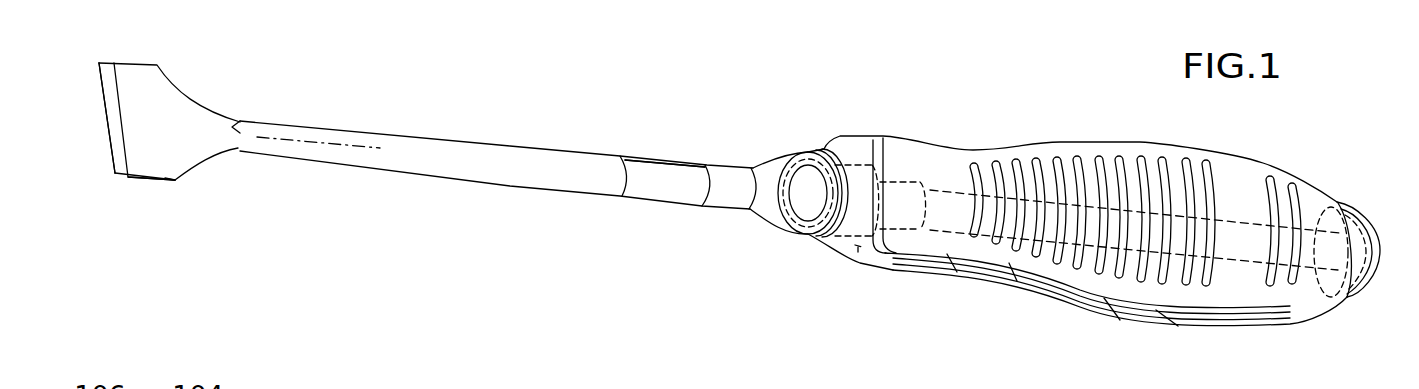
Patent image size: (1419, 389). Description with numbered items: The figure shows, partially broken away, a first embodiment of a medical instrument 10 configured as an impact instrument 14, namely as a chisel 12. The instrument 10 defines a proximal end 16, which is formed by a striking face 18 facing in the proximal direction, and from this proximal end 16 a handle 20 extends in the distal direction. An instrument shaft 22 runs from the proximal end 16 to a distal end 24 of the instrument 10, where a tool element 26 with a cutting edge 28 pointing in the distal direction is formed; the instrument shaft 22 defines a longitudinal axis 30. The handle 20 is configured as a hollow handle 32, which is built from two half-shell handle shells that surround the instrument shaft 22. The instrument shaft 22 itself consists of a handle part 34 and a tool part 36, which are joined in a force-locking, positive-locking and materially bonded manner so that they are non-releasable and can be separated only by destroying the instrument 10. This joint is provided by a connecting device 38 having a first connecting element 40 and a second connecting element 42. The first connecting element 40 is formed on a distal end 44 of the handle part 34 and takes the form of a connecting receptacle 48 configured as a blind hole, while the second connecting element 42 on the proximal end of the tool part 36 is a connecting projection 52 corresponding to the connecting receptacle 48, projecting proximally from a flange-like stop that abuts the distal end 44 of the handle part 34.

The medical instrument 10 is at (648, 141).
The chisel 12 is at (882, 110).
The impact instrument 14 is at (962, 125).
The proximal end 16 is at (1381, 236).
The striking face 18 is at (1380, 280).
The handle 20 is at (1060, 307).
The instrument shaft 22 is at (393, 133).
The distal end 24 is at (115, 172).
The tool element 26 is at (147, 117).
The cutting edge 28 is at (103, 103).
The longitudinal axis 30 is at (300, 140).
The hollow handle 32 is at (1065, 136).
The handle part 34 is at (1230, 214).
The tool part 36 is at (484, 188).
The connecting device 38 is at (831, 258).
The first connecting element 40 is at (800, 232).
The second connecting element 42 is at (822, 140).
The distal end of the handle part 44 is at (860, 257).
The connecting receptacle 48 is at (800, 232).
The connecting projection 52 is at (822, 140).